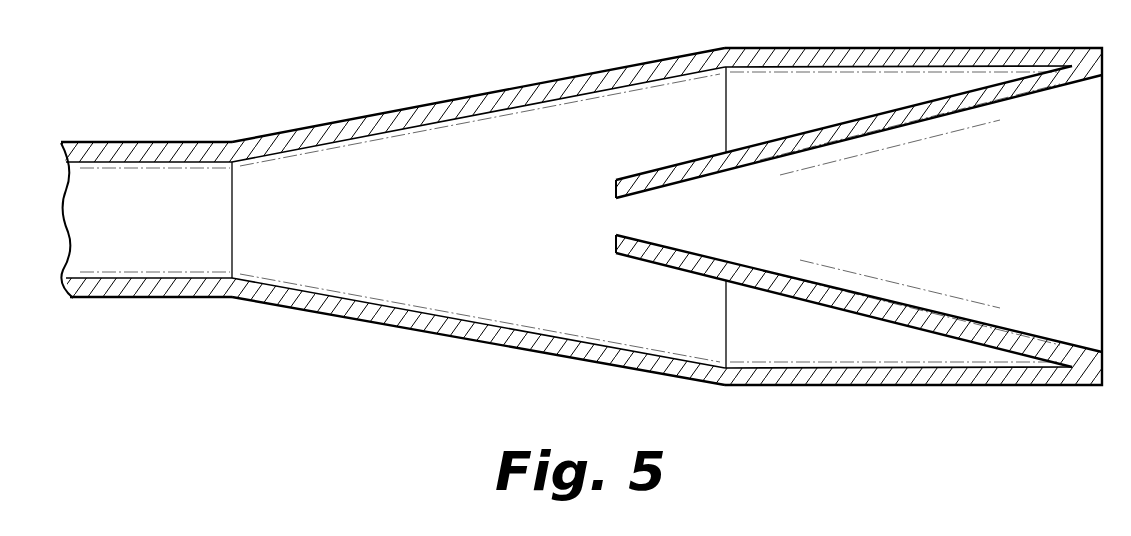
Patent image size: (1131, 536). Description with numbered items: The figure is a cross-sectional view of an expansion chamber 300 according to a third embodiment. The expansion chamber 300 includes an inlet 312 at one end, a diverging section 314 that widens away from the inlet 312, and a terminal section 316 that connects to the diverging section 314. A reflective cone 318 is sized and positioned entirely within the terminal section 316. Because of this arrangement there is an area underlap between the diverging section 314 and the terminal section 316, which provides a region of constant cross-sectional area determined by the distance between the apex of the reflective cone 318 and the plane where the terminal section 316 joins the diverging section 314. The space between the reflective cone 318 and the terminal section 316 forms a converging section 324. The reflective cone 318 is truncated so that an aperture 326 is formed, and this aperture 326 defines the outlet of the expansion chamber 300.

The expansion chamber 300 is at (300, 325).
The inlet 312 is at (75, 143).
The diverging section 314 is at (422, 221).
The terminal section 316 is at (773, 48).
The reflective cone 318 is at (708, 157).
The converging section 324 is at (714, 331).
The aperture 326 is at (637, 223).